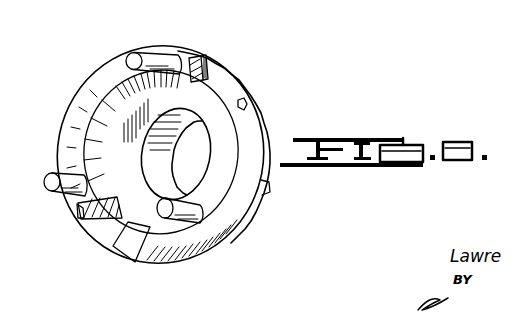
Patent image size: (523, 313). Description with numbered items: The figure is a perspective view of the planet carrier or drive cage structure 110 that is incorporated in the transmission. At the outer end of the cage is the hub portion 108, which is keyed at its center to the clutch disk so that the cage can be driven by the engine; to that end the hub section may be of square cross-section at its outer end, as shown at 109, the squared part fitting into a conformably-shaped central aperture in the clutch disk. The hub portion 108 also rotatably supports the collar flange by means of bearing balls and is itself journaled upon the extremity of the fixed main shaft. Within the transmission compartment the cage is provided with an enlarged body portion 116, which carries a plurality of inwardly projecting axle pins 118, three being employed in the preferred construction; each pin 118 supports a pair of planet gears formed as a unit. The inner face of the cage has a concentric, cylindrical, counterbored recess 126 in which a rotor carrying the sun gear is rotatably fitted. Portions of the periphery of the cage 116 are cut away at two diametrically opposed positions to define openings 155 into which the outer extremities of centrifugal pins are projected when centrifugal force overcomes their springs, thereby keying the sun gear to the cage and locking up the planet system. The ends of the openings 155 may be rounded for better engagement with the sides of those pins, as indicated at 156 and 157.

The hub portion 108 is at (268, 133).
The square cross-section outer end 109 is at (270, 184).
The planet carrier or drive cage structure 110 is at (268, 113).
The enlarged body portion 116 is at (190, 52).
The axle pins 118 is at (127, 60).
The counterbored recess 126 is at (100, 112).
The openings 155 is at (208, 80).
The rounded end of opening 156 is at (244, 103).
The rounded end of opening 157 is at (210, 62).